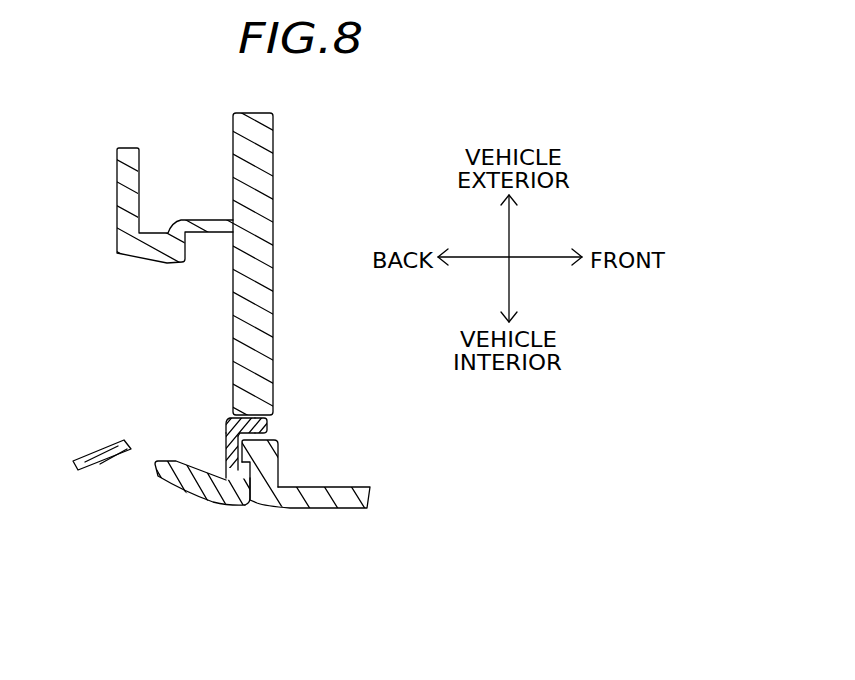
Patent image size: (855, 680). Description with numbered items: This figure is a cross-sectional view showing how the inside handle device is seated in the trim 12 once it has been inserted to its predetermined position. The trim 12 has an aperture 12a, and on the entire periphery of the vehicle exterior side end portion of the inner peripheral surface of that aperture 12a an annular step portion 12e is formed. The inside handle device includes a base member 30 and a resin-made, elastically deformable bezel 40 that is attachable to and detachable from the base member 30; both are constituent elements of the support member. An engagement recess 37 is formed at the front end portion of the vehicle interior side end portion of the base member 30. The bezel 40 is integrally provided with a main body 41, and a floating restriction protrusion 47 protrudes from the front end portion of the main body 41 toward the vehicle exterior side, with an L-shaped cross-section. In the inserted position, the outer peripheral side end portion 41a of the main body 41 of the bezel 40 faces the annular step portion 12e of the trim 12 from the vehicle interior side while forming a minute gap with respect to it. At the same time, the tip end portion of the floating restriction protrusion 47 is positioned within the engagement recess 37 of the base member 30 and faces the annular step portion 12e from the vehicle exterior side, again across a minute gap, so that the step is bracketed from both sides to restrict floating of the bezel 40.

The base member 30 is at (268, 207).
The engagement recess 37 is at (237, 423).
The floating restriction protrusion 47 is at (267, 423).
The trim 12 is at (353, 507).
The aperture 12a is at (223, 477).
The annular step portion 12e is at (250, 450).
The bezel 40 is at (155, 466).
The main body 41 is at (190, 483).
The outer peripheral side end portion 41a is at (238, 503).